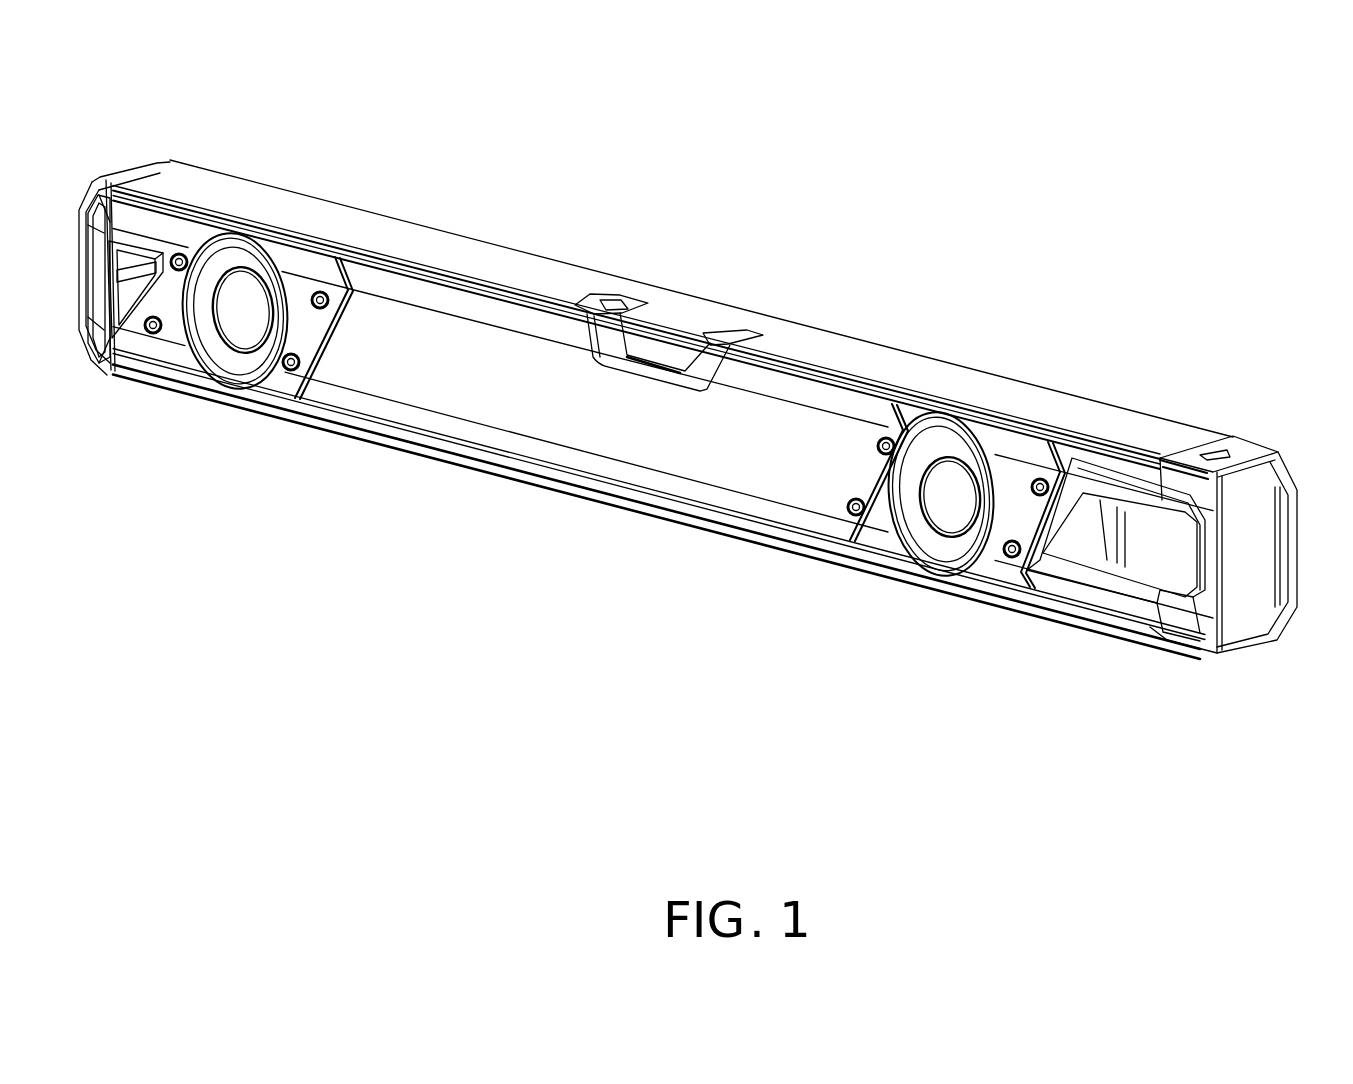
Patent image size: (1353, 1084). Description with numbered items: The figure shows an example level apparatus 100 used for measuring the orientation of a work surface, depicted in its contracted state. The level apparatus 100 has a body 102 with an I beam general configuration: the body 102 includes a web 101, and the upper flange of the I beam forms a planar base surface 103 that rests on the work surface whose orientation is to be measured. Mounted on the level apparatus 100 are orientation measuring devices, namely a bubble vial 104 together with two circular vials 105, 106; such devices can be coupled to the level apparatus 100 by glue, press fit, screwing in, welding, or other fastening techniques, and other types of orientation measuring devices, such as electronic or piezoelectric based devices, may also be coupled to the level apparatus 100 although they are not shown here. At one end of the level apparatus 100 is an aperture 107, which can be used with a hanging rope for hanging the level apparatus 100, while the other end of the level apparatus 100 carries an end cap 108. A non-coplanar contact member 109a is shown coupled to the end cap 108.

The level apparatus 100 is at (957, 143).
The web 101 is at (410, 390).
The body 102 is at (573, 497).
The planar base surface 103 is at (472, 255).
The bubble vial 104 is at (668, 330).
The circular vial 105 is at (240, 290).
The circular vial 106 is at (958, 488).
The aperture 107 is at (136, 287).
The end cap 108 is at (1267, 482).
The non-coplanar contact member 109a is at (1205, 450).